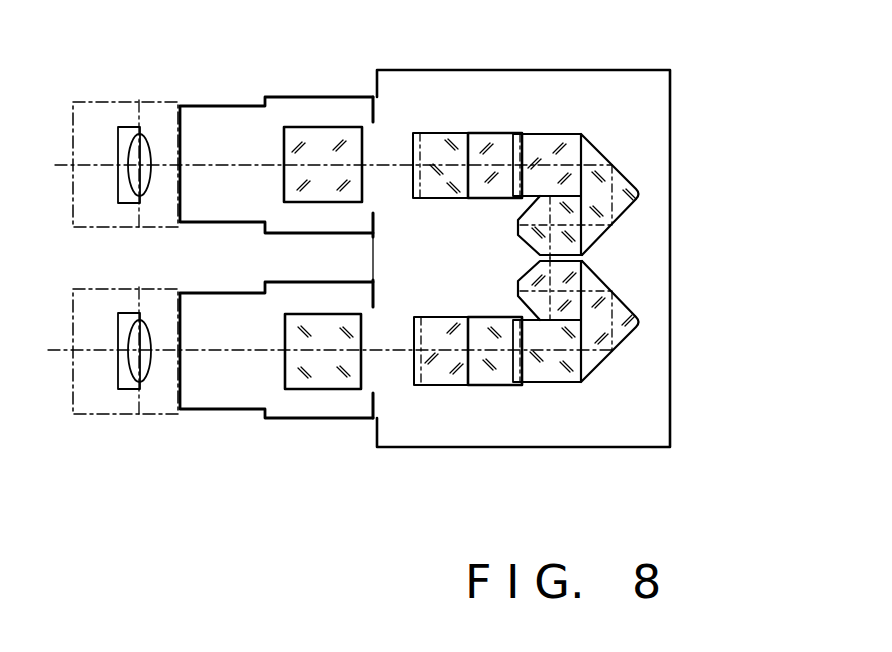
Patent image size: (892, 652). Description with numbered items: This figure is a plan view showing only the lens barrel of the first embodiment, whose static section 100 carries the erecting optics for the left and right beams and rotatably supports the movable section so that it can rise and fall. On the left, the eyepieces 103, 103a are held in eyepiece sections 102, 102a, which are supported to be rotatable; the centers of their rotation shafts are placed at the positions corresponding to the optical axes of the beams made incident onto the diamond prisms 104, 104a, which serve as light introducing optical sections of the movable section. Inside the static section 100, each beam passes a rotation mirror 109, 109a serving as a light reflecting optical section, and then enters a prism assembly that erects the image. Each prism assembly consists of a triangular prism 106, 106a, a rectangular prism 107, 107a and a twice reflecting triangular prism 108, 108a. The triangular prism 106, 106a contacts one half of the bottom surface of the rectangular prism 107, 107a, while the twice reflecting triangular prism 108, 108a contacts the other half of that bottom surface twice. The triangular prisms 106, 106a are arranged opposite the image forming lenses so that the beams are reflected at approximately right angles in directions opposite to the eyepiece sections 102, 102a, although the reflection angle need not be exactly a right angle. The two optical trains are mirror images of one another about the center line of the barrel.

The static section 100 is at (655, 92).
The eyepiece section 102 is at (229, 117).
The eyepiece section 102a is at (229, 405).
The eyepiece 103 is at (131, 128).
The eyepiece 103a is at (136, 391).
The diamond prism 104 is at (323, 145).
The diamond prism 104a is at (323, 377).
The triangular prism 106 is at (578, 238).
The triangular prism 106a is at (575, 278).
The rectangular prism 107 is at (623, 175).
The rectangular prism 107a is at (620, 335).
The twice reflecting triangular prism 108 is at (547, 141).
The twice reflecting triangular prism 108a is at (552, 373).
The rotation mirror 109 is at (432, 143).
The rotation mirror 109a is at (435, 378).